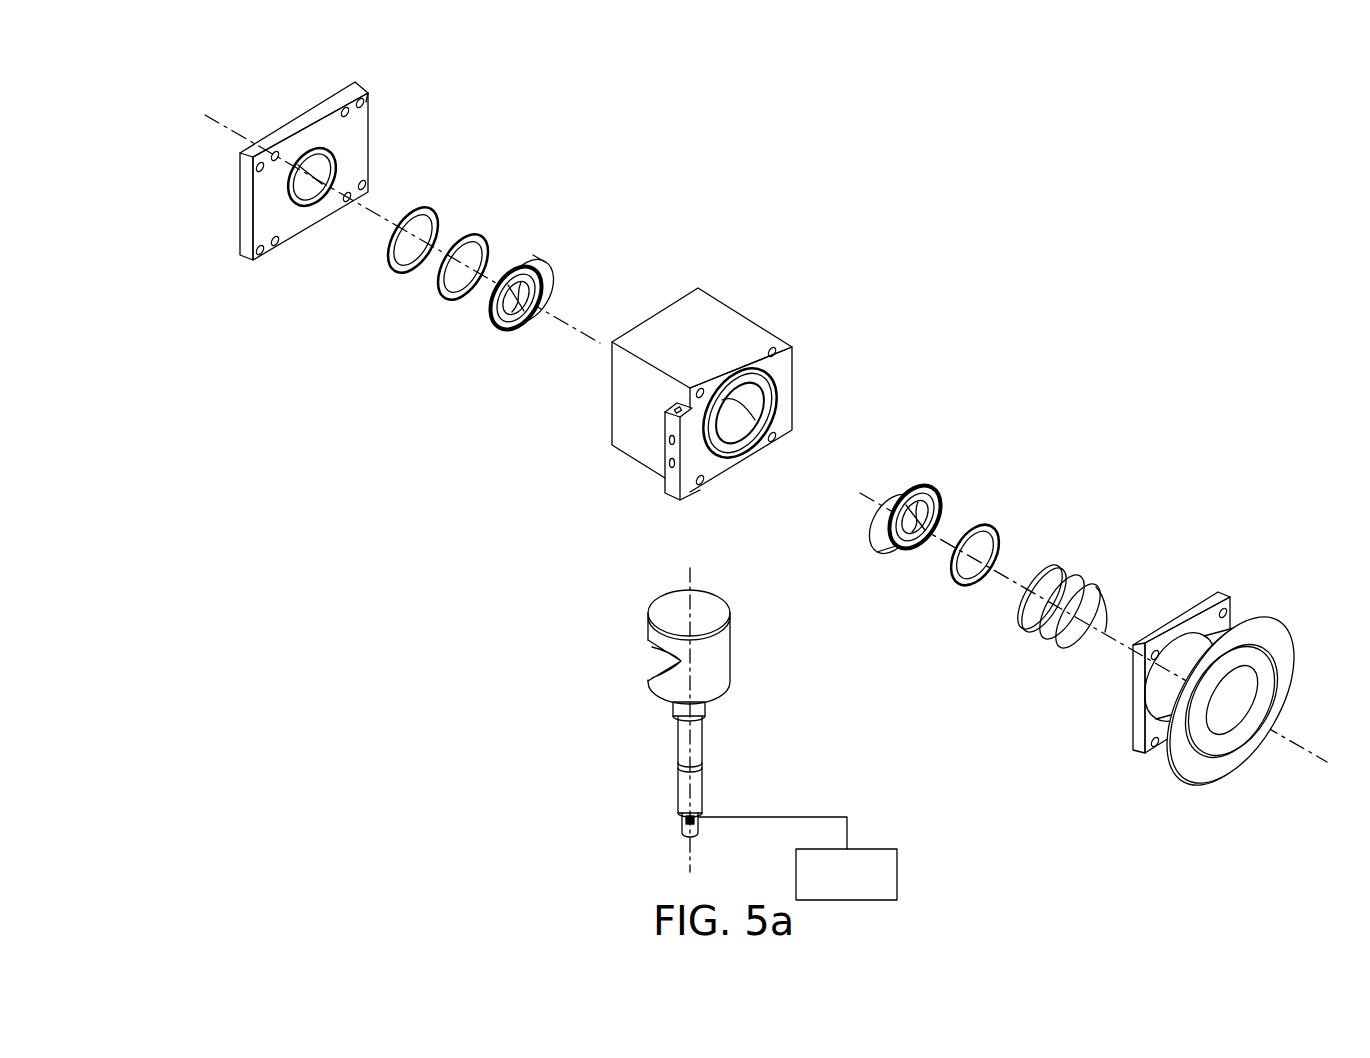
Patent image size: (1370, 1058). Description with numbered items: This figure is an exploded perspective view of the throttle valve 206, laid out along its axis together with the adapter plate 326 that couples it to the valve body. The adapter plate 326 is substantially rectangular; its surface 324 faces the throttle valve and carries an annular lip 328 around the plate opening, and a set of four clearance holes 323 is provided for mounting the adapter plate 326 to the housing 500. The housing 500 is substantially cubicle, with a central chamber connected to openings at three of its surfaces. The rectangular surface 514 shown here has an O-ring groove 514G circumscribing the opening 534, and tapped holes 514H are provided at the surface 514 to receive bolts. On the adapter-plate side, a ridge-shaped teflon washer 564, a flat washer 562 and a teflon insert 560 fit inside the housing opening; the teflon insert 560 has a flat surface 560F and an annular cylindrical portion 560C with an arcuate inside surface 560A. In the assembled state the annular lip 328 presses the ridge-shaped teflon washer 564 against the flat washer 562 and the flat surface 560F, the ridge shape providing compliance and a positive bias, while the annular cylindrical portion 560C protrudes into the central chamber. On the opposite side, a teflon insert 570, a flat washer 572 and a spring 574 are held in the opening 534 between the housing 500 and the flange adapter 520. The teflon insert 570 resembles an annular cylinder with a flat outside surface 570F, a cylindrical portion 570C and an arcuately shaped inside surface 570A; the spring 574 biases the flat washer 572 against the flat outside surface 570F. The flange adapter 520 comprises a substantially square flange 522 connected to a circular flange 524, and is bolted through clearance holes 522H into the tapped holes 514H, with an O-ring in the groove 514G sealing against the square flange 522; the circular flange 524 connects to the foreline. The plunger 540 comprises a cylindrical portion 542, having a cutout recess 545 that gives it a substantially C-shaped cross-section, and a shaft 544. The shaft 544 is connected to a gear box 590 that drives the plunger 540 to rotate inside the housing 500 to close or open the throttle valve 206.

The throttle valve 206 is at (692, 394).
The clearance holes 323 is at (277, 154).
The surface 324 is at (317, 200).
The adapter plate 326 is at (366, 92).
The annular lip 328 is at (305, 204).
The housing 500 is at (692, 394).
The surface 514 is at (785, 393).
The tapped holes 514H is at (694, 395).
The O-ring groove 514G is at (667, 480).
The opening 534 is at (728, 413).
The teflon insert 560 is at (502, 275).
The arcuate inside surface 560A is at (541, 308).
The annular cylindrical portion 560C is at (502, 322).
The flat surface 560F is at (495, 316).
The flat washer 562 is at (470, 238).
The ridge-shaped teflon washer 564 is at (434, 214).
The teflon insert 570 is at (957, 485).
The inside surface 570A is at (900, 480).
The cylindrical portion 570C is at (886, 529).
The flat outside surface 570F is at (940, 518).
The flat washer 572 is at (1003, 548).
The spring 574 is at (1050, 640).
The flange adapter 520 is at (1187, 686).
The square flange 522 is at (1140, 723).
The clearance holes 522H is at (1158, 746).
The circular flange 524 is at (1226, 773).
The plunger 540 is at (669, 727).
The cylindrical portion 542 is at (690, 655).
The shaft 544 is at (682, 780).
The recess 545 is at (668, 662).
The gear box 590 is at (826, 887).